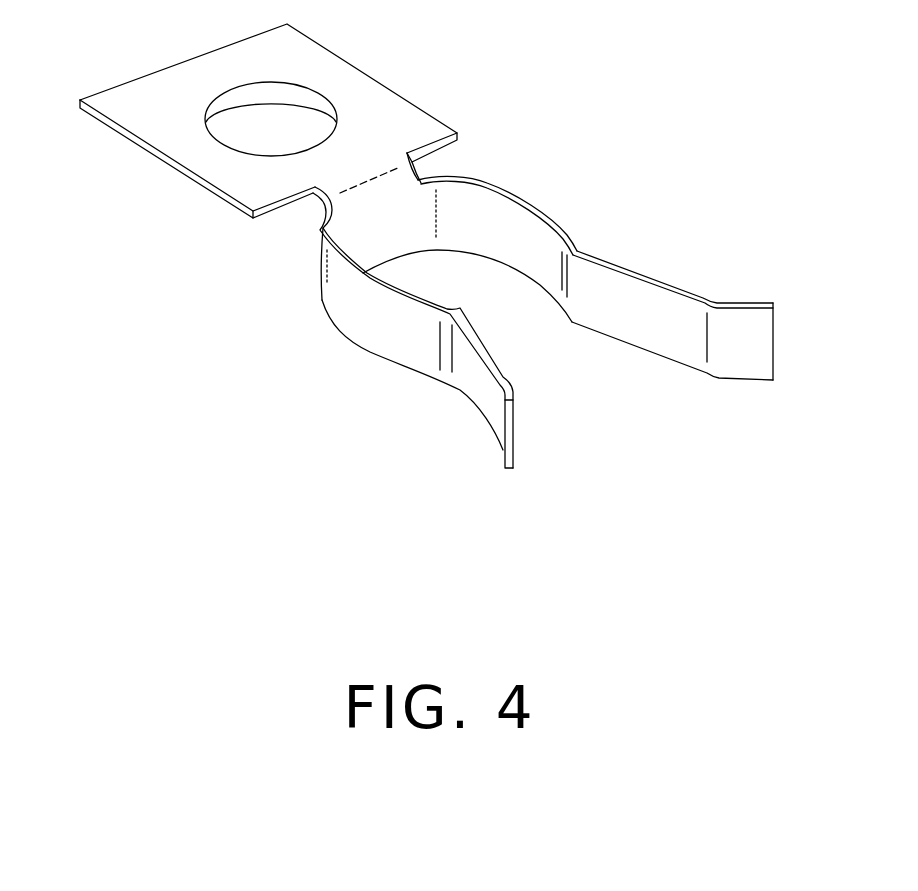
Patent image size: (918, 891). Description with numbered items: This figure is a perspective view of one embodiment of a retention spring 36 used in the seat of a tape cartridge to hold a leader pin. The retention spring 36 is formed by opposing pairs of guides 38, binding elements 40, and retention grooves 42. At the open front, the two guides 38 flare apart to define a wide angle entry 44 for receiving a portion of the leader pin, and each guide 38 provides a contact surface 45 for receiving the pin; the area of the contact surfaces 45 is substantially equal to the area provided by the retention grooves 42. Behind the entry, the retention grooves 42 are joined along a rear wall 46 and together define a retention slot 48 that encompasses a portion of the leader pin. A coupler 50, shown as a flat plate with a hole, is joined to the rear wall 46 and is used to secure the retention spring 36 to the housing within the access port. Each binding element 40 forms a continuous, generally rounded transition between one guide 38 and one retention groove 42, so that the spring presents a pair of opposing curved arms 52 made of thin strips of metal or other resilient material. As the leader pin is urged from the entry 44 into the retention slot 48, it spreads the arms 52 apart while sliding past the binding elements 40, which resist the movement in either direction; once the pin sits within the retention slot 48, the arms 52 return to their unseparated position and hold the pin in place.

The retention spring 36 is at (610, 60).
The guide 38 is at (693, 293).
The binding element 40 is at (573, 318).
The retention groove 42 is at (503, 233).
The wide angle entry 44 is at (587, 375).
The contact surface 45 is at (625, 332).
The rear wall 46 is at (392, 232).
The retention slot 48 is at (467, 220).
The coupler 50 is at (145, 93).
The curved arm 52 is at (642, 225).